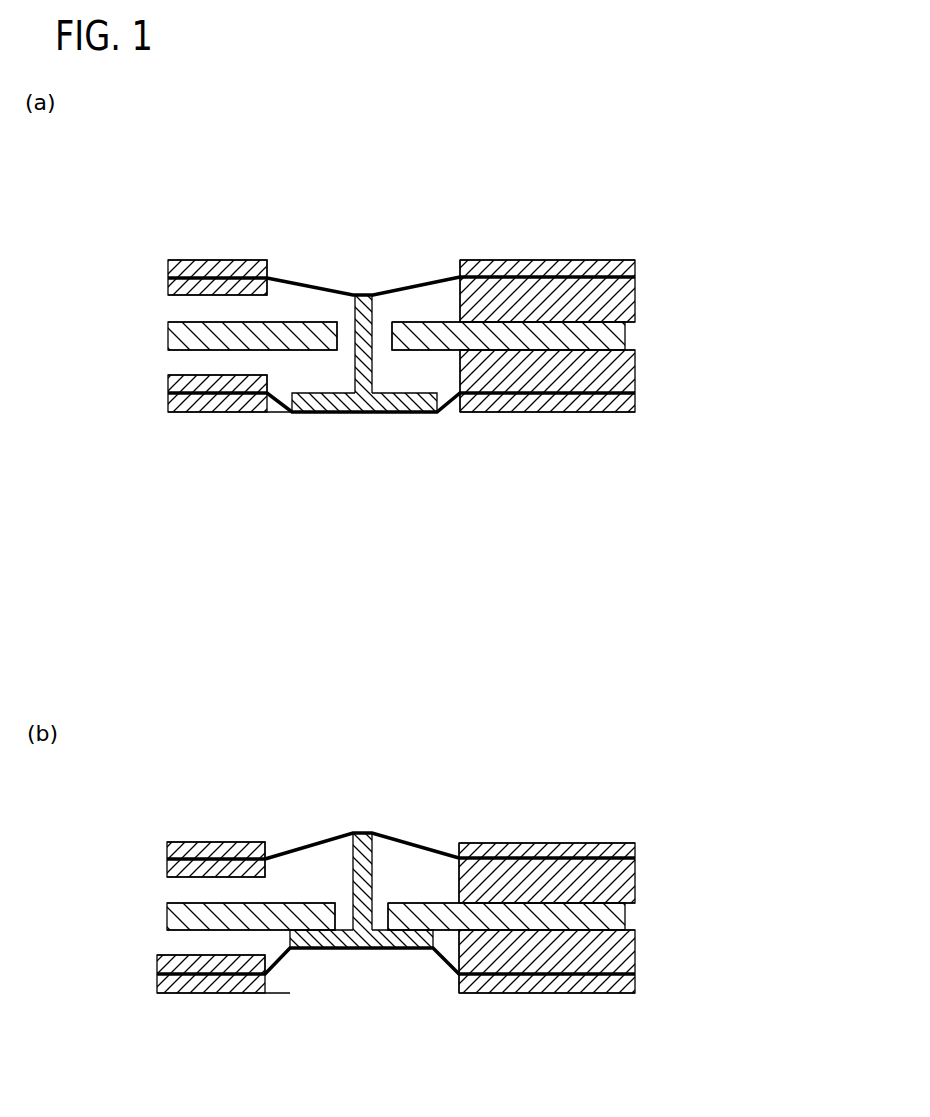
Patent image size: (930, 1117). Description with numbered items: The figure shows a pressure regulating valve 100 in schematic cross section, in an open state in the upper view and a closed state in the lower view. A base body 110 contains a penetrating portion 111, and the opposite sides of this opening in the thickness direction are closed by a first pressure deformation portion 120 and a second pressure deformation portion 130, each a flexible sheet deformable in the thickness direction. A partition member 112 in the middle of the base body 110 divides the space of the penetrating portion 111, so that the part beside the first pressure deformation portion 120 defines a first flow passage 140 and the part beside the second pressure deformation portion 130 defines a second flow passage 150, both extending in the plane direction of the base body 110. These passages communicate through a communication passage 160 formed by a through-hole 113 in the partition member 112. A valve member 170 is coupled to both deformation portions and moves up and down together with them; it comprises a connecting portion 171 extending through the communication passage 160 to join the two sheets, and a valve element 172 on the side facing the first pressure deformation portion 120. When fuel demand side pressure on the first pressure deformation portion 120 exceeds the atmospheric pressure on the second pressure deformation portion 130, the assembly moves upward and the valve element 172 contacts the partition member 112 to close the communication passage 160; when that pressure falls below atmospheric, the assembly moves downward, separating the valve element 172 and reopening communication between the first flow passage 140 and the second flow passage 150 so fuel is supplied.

The pressure regulating valve 100 is at (522, 155).
The base body 110 is at (553, 260).
The penetrating portion 111 is at (400, 252).
The partition member 112 is at (410, 330).
The through-hole 113 is at (343, 330).
The first pressure deformation portion 120 is at (278, 407).
The second pressure deformation portion 130 is at (290, 278).
The first flow passage 140 is at (332, 375).
The second flow passage 150 is at (303, 305).
The communication passage 160 is at (385, 350).
The valve member 170 is at (393, 369).
The connecting portion 171 is at (358, 360).
The valve element 172 is at (372, 405).